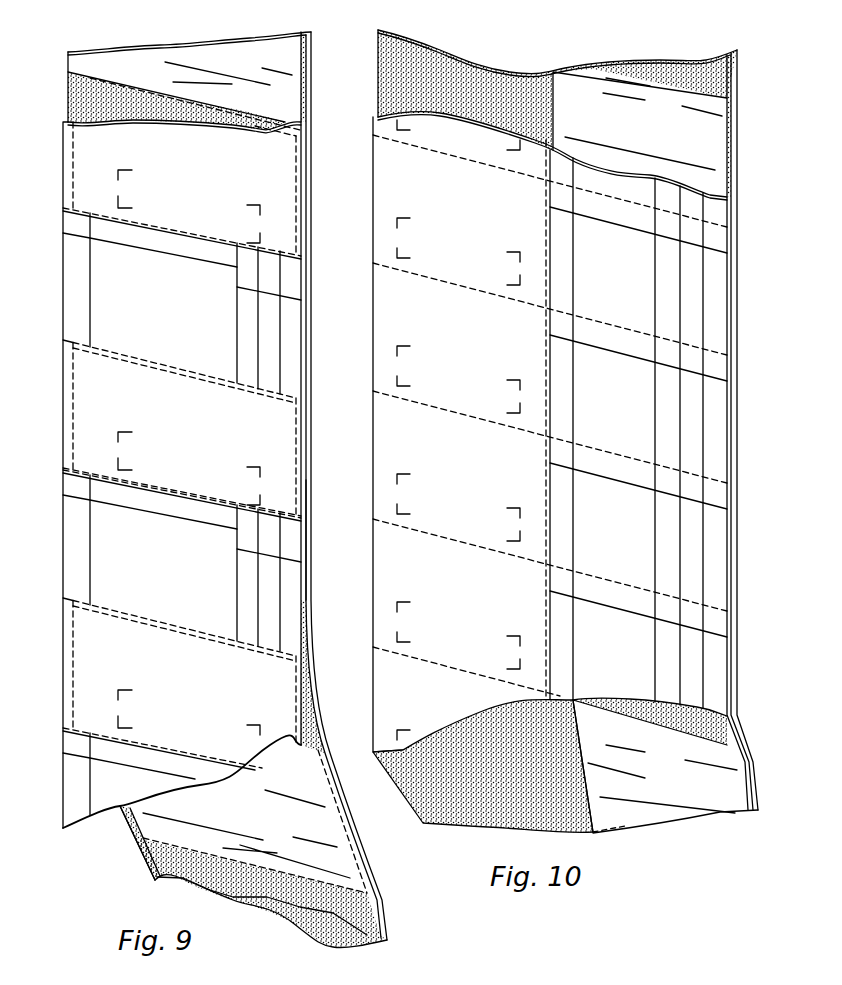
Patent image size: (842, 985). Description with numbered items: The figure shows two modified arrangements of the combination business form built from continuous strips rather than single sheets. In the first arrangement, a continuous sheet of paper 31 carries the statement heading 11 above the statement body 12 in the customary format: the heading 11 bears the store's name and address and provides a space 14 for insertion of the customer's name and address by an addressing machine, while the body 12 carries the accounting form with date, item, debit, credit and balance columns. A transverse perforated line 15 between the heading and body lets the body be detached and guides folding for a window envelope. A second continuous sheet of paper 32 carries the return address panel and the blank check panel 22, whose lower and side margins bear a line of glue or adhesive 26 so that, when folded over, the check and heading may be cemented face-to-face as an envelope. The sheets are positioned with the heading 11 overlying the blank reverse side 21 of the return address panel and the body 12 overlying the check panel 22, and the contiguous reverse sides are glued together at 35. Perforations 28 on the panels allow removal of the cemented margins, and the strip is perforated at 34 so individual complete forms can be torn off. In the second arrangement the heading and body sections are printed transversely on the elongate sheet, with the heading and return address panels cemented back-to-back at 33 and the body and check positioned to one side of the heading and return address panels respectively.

In FIG. 9, the statement heading 11 is at (85, 141).
In FIG. 10, the statement heading 11 is at (390, 160).
In FIG. 9, the statement body 12 is at (90, 283).
In FIG. 10, the statement body 12 is at (723, 212).
In FIG. 9, the space for customer name and address 14 is at (258, 222).
In FIG. 10, the space for customer name and address 14 is at (405, 357).
In FIG. 9, the transverse perforated line 15 is at (296, 521).
In FIG. 10, the transverse perforated line 15 is at (546, 358).
In FIG. 9, the blank reverse side of return address panel 21 is at (82, 97).
In FIG. 9, the blank check panel 22 is at (160, 57).
In FIG. 10, the blank check panel 22 is at (722, 60).
In FIG. 9, the line of glue or adhesive 26 is at (311, 40).
In FIG. 10, the line of glue or adhesive 26 is at (740, 58).
In FIG. 9, the perforation 28 is at (311, 57).
In FIG. 9, the continuous sheet of paper 31 is at (62, 812).
In FIG. 9, the second continuous sheet of paper 32 is at (137, 845).
In FIG. 10, the cement between heading and return address panels 33 is at (470, 65).
In FIG. 9, the strip perforation 34 is at (70, 76).
In FIG. 10, the strip perforation 34 is at (738, 100).
In FIG. 9, the cement between reverse sides 35 is at (311, 490).